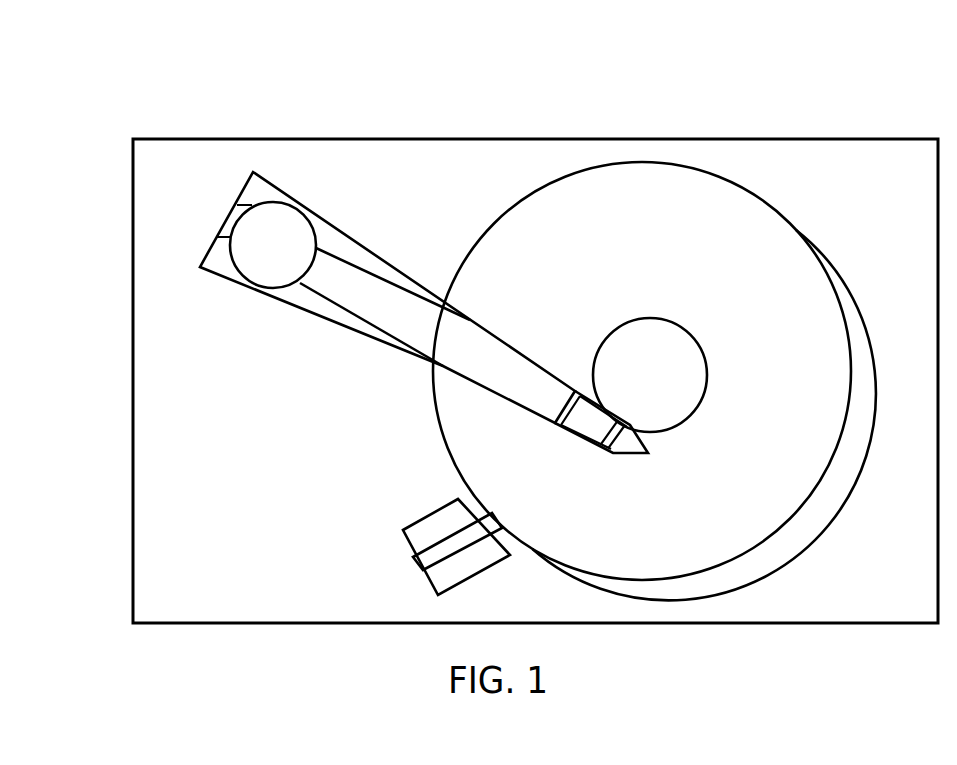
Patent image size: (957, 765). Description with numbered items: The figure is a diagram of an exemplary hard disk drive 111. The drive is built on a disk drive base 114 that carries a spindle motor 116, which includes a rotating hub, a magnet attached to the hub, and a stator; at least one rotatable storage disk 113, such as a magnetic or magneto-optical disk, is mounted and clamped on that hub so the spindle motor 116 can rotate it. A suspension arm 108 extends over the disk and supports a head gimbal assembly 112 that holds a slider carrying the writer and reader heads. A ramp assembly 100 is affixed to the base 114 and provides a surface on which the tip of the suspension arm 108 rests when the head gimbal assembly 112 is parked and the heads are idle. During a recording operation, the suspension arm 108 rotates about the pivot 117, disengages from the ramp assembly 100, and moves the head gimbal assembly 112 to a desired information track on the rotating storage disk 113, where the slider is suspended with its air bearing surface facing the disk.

The hard disk drive 111 is at (369, 139).
The disk drive base 114 is at (155, 513).
The rotatable storage disk 113 is at (473, 238).
The spindle motor 116 is at (649, 318).
The pivot 117 is at (263, 275).
The suspension arm 108 is at (387, 297).
The head gimbal assembly 112 is at (580, 440).
The ramp assembly 100 is at (413, 567).